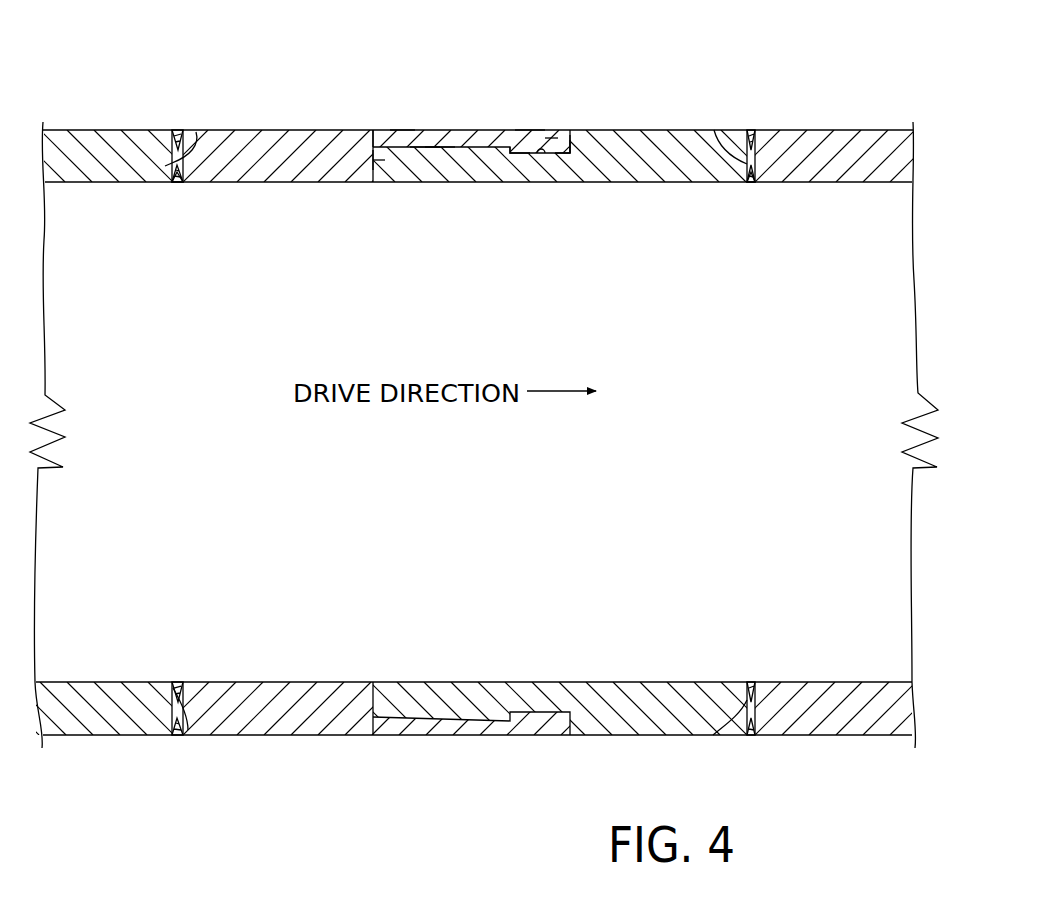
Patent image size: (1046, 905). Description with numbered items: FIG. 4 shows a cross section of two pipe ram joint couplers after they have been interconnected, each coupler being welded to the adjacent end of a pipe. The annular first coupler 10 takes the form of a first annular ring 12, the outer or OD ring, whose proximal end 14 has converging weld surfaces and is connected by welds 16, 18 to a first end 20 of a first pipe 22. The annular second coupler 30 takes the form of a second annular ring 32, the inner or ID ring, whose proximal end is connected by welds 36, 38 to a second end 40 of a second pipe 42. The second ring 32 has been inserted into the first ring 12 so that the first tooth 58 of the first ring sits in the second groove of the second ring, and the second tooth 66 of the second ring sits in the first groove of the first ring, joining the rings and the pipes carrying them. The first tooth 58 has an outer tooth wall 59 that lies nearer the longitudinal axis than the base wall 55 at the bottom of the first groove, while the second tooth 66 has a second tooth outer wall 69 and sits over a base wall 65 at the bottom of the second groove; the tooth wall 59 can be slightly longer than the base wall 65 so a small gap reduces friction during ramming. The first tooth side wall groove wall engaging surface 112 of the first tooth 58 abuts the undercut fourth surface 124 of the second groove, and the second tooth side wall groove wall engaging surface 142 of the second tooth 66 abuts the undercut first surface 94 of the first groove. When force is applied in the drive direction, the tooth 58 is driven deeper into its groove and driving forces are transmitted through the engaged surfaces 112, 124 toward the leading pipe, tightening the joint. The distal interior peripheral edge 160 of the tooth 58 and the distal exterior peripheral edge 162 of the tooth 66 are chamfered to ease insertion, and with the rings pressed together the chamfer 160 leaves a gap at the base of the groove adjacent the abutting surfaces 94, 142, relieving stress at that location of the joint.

The first coupler 10 is at (288, 105).
The first annular ring 12 is at (326, 123).
The proximal end 14 is at (165, 166).
The weld 16 is at (178, 130).
The weld 18 is at (176, 183).
The first end 20 is at (196, 132).
The first pipe 22 is at (88, 147).
The second coupler 30 is at (671, 103).
The second annular ring 32 is at (618, 125).
The weld 36 is at (746, 130).
The weld 38 is at (750, 183).
The second end 40 is at (714, 130).
The second pipe 42 is at (795, 130).
The base wall 55 is at (424, 147).
The first tooth 58 is at (527, 133).
The outer tooth wall 59 is at (526, 150).
The base wall 65 is at (534, 153).
The second tooth 66 is at (440, 153).
The second tooth outer wall 69 is at (402, 147).
The first surface 94 is at (378, 163).
The first tooth side wall groove wall engaging surface 112 is at (560, 148).
The fourth surface 124 is at (553, 138).
The second tooth side wall groove wall engaging surface 142 is at (373, 160).
The distal interior peripheral edge 160 is at (573, 152).
The distal exterior peripheral edge 162 is at (373, 147).